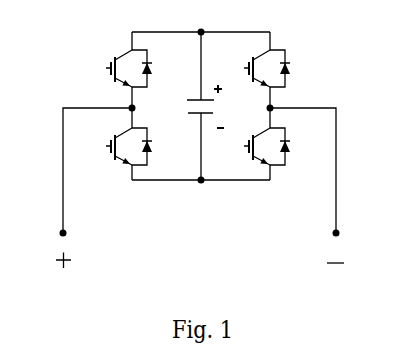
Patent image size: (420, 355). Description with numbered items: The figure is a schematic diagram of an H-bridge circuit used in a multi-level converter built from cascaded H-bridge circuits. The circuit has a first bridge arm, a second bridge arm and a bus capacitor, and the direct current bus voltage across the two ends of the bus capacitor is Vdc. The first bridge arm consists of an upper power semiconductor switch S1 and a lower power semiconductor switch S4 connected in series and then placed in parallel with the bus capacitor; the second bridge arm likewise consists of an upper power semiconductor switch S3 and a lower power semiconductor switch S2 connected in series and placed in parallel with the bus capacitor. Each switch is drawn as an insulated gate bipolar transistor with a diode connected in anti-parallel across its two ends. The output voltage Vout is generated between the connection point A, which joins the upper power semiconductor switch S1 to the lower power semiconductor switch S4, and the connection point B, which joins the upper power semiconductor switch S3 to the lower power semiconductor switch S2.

The upper power semiconductor switch S1 is at (115, 68).
The lower power semiconductor switch S2 is at (283, 146).
The upper power semiconductor switch S3 is at (283, 68).
The lower power semiconductor switch S4 is at (115, 146).
The connection point A is at (87, 183).
The connection point B is at (314, 181).
The DC bus voltage Vdc is at (190, 106).
The output voltage Vout is at (203, 247).